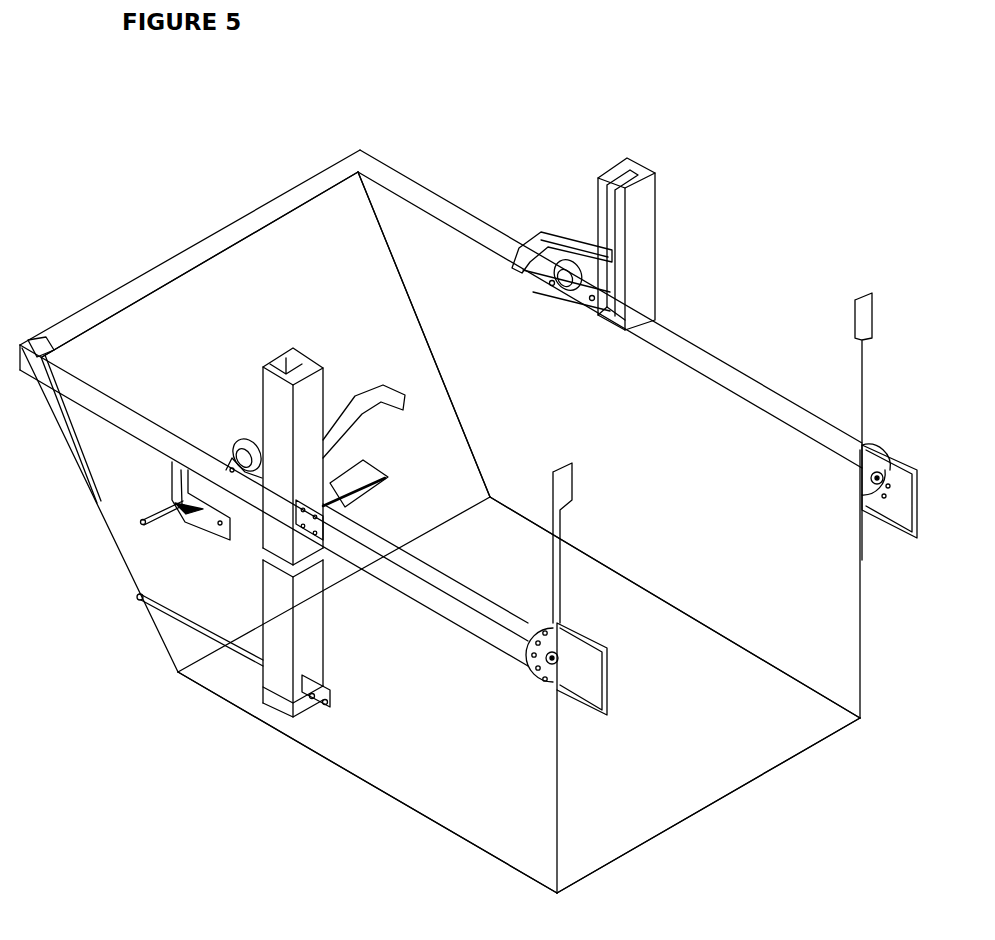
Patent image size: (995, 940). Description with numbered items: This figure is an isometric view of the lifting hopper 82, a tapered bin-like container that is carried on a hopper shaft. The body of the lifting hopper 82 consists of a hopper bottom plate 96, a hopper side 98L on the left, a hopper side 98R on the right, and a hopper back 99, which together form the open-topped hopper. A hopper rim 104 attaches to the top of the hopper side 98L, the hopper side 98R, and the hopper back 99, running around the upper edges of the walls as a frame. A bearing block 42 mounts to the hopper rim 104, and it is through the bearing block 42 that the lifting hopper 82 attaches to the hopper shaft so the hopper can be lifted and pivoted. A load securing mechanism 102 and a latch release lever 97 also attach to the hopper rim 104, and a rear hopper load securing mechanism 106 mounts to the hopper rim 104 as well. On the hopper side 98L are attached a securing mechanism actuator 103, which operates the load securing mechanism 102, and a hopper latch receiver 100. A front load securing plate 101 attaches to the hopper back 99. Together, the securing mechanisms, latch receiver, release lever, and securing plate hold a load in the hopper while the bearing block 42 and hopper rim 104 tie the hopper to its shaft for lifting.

The bearing block 42 is at (570, 290).
The lifting hopper 82 is at (330, 735).
The hopper bottom plate 96 is at (692, 772).
The latch release lever 97 is at (43, 345).
The hopper side (left) 98L is at (397, 752).
The hopper side (right) 98R is at (800, 598).
The hopper back 99 is at (283, 253).
The hopper latch receiver 100 is at (165, 512).
The front load securing plate 101 is at (362, 482).
The load securing mechanism 102 is at (660, 253).
The securing mechanism actuator 103 is at (277, 595).
The hopper rim 104 is at (445, 207).
The rear hopper load securing mechanism 106 is at (865, 398).